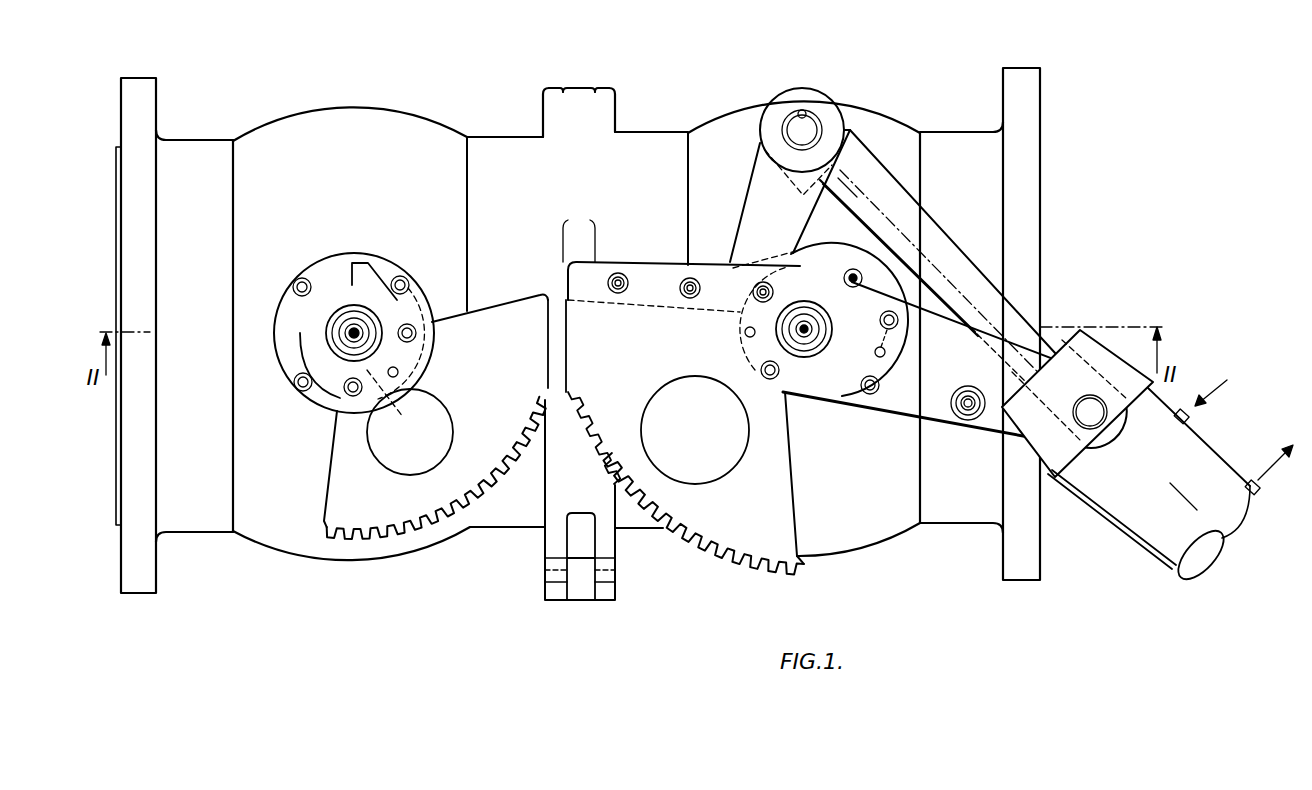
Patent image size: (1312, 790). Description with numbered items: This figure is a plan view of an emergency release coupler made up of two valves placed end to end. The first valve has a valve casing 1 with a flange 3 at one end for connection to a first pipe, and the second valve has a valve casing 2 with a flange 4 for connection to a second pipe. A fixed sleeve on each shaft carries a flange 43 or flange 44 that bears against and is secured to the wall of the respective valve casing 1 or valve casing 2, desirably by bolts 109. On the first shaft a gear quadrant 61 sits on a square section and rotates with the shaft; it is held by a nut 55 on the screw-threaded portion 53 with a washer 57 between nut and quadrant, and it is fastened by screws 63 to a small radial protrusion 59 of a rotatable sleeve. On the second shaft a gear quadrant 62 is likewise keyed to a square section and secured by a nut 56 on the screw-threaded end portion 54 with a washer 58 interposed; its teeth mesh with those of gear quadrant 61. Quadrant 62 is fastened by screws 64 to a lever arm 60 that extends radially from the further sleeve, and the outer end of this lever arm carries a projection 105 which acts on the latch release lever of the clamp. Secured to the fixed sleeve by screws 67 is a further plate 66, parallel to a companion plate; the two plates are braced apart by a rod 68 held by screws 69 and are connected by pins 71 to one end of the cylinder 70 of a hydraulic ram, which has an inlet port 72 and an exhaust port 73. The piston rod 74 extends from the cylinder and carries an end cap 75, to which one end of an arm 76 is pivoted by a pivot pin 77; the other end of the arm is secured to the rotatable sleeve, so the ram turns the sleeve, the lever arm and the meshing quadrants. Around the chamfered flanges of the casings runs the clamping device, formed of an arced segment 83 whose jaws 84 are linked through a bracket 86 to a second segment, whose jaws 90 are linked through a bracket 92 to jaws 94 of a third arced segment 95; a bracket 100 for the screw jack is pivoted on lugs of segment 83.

The valve casing 1 is at (311, 218).
The valve casing 2 is at (940, 135).
The flange 3 is at (147, 97).
The flange 4 is at (1020, 92).
The flange 43 is at (322, 262).
The flange 44 is at (820, 265).
The screw-threaded portion 53 is at (343, 330).
The screw-threaded end portion 54 is at (816, 340).
The nut 55 is at (340, 336).
The nut 56 is at (800, 345).
The washer 57 is at (332, 352).
The washer 58 is at (750, 340).
The radial protrusion 59 is at (410, 422).
The lever arm 60 is at (648, 287).
The gear quadrant 61 is at (400, 505).
The gear quadrant 62 is at (770, 522).
The screws 63 is at (412, 328).
The screws 64 is at (748, 290).
The further plate 66 is at (917, 398).
The screws 67 is at (880, 384).
The rod 68 is at (960, 407).
The screws 69 is at (966, 420).
The cylinder 70 is at (1150, 520).
The pins 71 is at (1093, 400).
The inlet port 72 is at (1190, 418).
The exhaust port 73 is at (1252, 486).
The piston rod 74 is at (1003, 315).
The end cap 75 is at (843, 132).
The arm 76 is at (768, 196).
The pivot pin 77 is at (808, 128).
The arced segment 83 is at (578, 132).
The jaws 84 is at (550, 84).
The bracket 86 is at (584, 84).
The jaws 90 is at (555, 601).
The bracket 92 is at (580, 601).
The jaws 94 is at (550, 556).
The arced segment 95 is at (550, 508).
The bracket 100 is at (565, 250).
The projection 105 is at (585, 302).
The bolts 109 is at (293, 287).